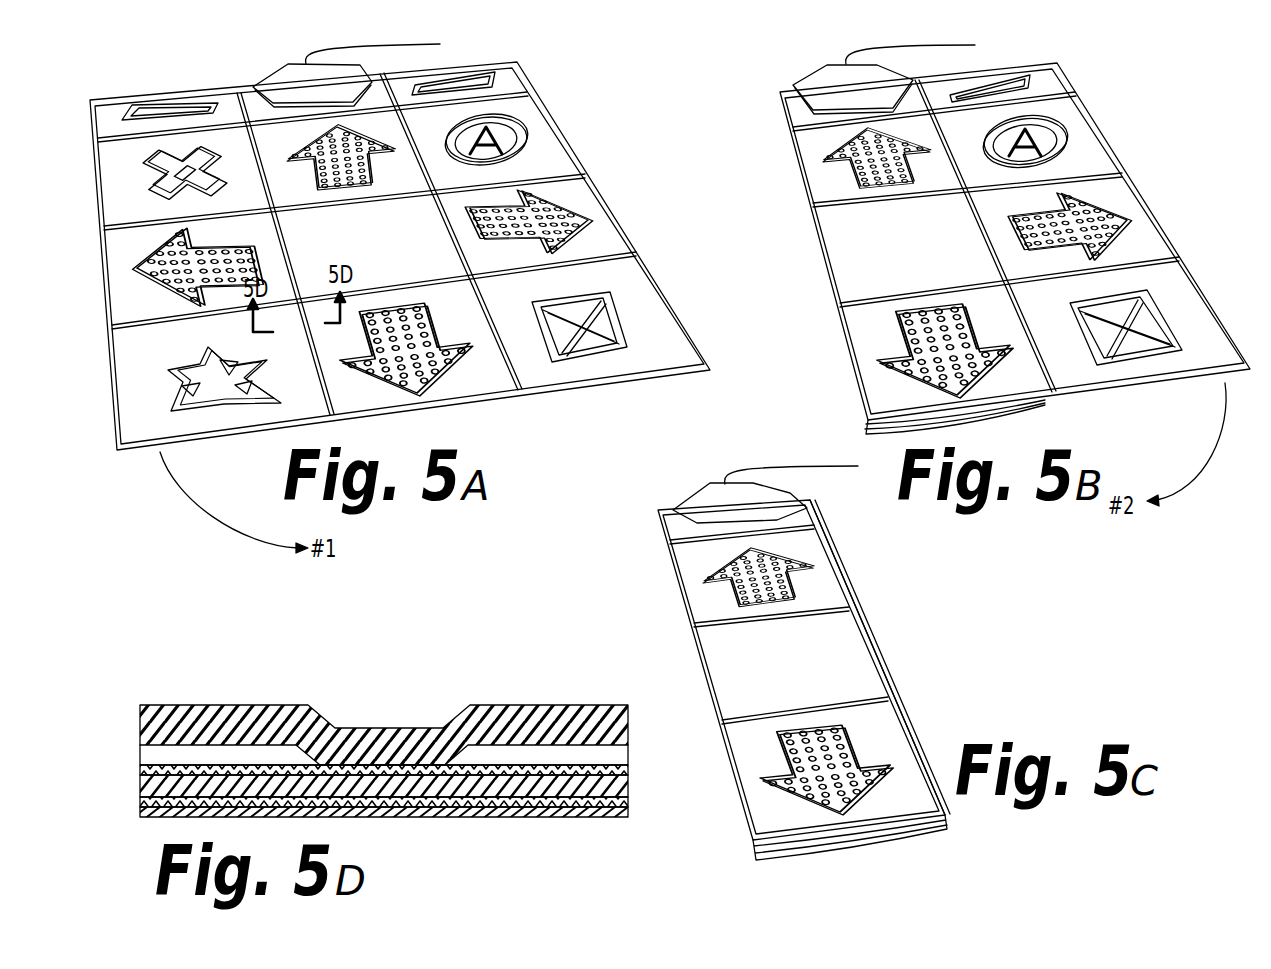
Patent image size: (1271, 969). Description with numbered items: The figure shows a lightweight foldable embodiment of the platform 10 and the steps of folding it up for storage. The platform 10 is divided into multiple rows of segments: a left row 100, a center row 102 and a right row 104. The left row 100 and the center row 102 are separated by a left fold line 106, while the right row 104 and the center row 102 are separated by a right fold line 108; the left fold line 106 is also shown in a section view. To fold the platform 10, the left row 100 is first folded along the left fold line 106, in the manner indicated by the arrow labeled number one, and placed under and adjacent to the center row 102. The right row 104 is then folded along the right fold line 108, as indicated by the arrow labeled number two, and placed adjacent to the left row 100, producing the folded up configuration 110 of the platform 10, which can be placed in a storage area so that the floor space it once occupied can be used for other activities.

In FIG. 5A, the platform 10 is at (382, 269).
In FIG. 5B, the platform 10 is at (970, 248).
In FIG. 5A, the left row 100 is at (113, 428).
In FIG. 5B, the left row 100 is at (1044, 407).
In FIG. 5C, the left row 100 is at (928, 827).
In FIG. 5D, the left row 100 is at (209, 705).
In FIG. 5A, the center row 102 is at (466, 380).
In FIG. 5B, the center row 102 is at (878, 262).
In FIG. 5C, the center row 102 is at (804, 652).
In FIG. 5D, the center row 102 is at (568, 705).
In FIG. 5A, the right row 104 is at (600, 178).
In FIG. 5B, the right row 104 is at (1141, 186).
In FIG. 5C, the right row 104 is at (760, 862).
In FIG. 5A, the left fold line 106 is at (257, 135).
In FIG. 5B, the left fold line 106 is at (790, 92).
In FIG. 5C, the left fold line 106 is at (779, 595).
In FIG. 5D, the left fold line 106 is at (403, 728).
In FIG. 5A, the right fold line 108 is at (403, 130).
In FIG. 5B, the right fold line 108 is at (947, 137).
In FIG. 5C, the folded up configuration 110 is at (918, 702).